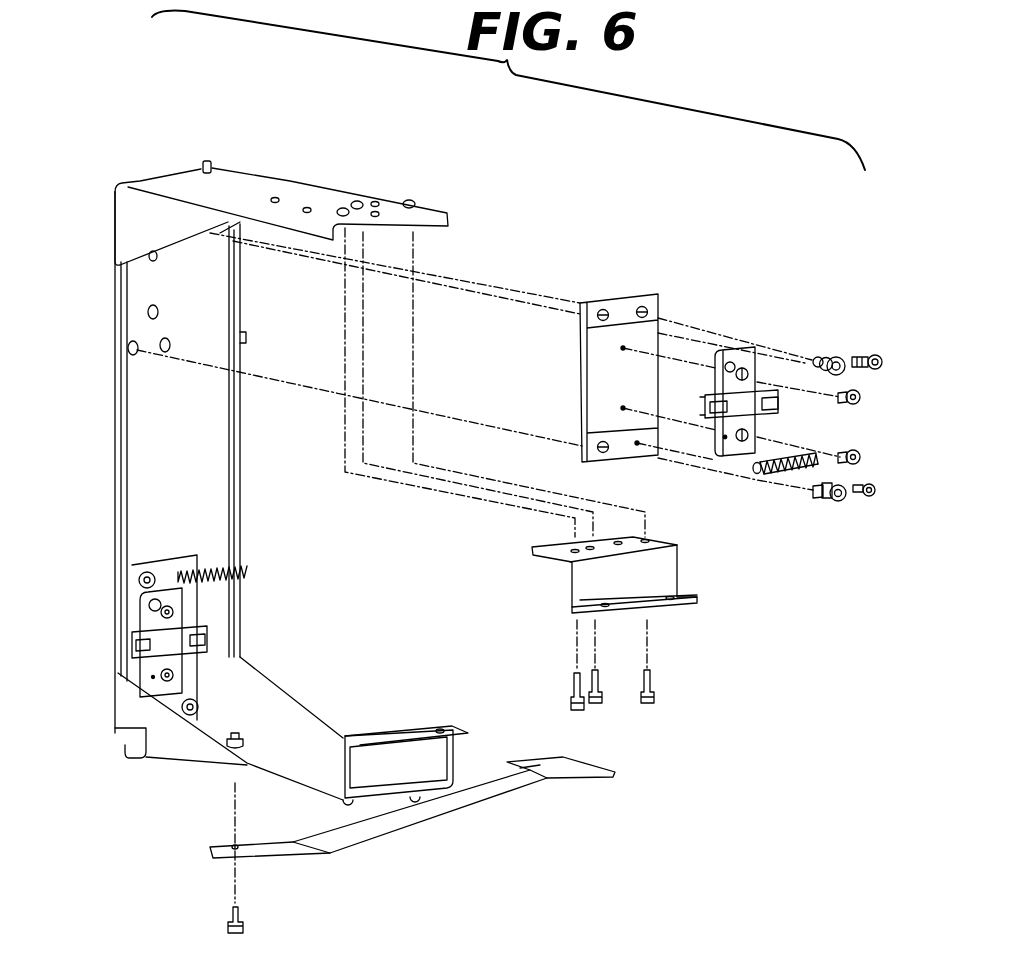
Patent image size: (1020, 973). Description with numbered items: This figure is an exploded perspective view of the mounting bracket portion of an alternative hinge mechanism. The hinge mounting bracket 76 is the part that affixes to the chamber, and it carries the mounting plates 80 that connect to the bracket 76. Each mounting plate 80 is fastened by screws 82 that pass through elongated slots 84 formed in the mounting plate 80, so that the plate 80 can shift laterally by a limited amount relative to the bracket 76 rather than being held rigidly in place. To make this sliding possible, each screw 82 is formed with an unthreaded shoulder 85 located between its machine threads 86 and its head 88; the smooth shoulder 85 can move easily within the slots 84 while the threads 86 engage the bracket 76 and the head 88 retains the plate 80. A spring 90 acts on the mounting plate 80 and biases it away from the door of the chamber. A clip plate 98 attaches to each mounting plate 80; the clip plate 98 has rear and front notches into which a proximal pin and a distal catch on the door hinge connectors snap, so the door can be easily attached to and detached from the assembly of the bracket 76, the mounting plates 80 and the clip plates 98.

The hinge mounting bracket 76 is at (150, 455).
The mounting plate 80 is at (603, 367).
The screw 82 is at (880, 366).
The elongated slot 84 is at (598, 308).
The unthreaded shoulder 85 is at (826, 357).
The machine threads 86 is at (818, 360).
The head 88 is at (840, 354).
The spring 90 is at (755, 470).
The clip plate 98 is at (725, 450).